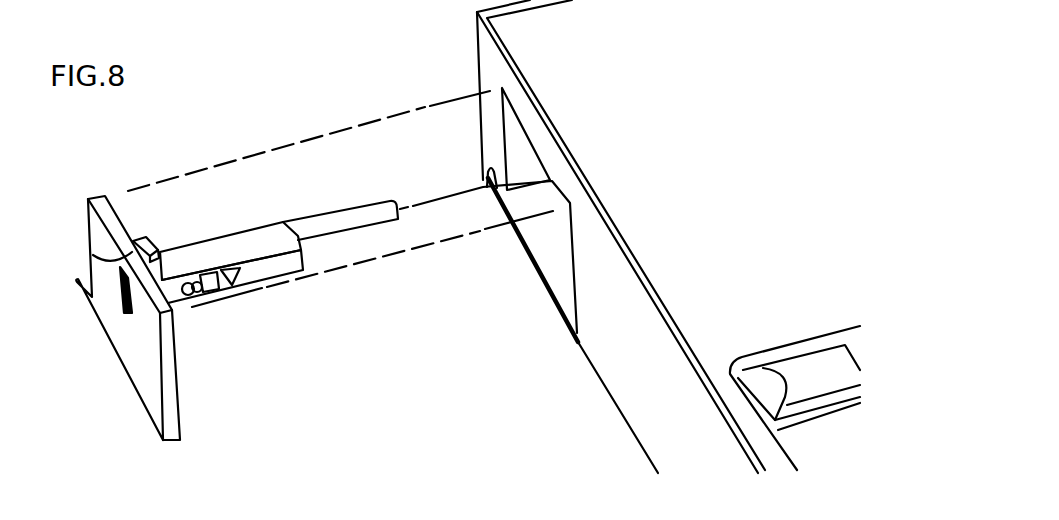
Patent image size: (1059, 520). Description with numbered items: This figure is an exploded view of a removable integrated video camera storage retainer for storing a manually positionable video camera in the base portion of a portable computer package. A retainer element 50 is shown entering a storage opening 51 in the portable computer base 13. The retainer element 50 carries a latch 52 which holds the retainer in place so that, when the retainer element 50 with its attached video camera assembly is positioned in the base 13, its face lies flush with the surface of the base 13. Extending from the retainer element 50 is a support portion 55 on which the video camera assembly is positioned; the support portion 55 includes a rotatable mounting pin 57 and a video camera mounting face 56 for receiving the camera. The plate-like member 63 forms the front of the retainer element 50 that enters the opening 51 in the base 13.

The frame 13 is at (478, 50).
The latch assembly 50 is at (102, 357).
The bracket 51 is at (574, 260).
The latch 52 is at (112, 256).
The housing cover 55 is at (243, 250).
The housing body 56 is at (262, 268).
The rod 57 is at (353, 222).
The plate 63 is at (142, 343).